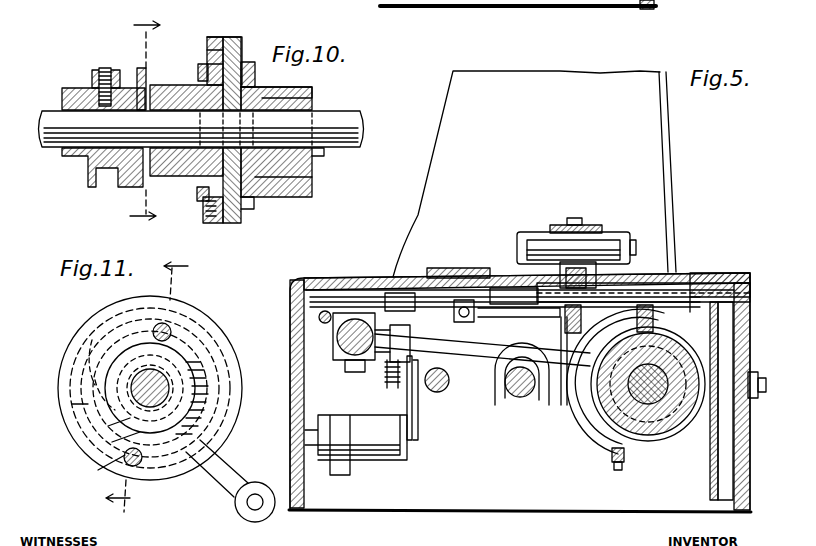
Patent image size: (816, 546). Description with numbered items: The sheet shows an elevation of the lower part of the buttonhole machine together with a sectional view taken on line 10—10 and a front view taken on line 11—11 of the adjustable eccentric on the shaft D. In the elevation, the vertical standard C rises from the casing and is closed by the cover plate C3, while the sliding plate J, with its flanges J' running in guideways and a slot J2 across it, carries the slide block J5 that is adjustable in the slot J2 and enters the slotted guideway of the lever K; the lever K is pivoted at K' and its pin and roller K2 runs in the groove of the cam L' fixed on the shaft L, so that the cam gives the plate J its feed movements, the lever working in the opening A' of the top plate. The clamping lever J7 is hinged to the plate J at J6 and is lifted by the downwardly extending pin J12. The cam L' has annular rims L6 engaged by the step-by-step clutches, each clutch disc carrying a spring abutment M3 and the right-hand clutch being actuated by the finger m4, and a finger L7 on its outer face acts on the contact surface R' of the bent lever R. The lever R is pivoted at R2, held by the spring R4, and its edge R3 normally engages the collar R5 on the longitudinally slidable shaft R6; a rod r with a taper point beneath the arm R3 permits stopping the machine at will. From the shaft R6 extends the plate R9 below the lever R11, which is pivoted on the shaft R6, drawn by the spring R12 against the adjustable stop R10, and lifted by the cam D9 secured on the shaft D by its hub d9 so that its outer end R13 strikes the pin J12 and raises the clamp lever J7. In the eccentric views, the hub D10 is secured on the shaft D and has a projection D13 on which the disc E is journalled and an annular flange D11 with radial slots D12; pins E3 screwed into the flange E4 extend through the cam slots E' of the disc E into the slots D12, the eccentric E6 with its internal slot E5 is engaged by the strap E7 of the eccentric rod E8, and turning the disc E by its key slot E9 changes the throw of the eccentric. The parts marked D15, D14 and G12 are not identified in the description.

In FIG. 10, the shaft D is at (360, 125).
In FIG. 11, the shaft D is at (182, 362).
In FIG. 5, the shaft D is at (512, 398).
In FIG. 10, the collar D15 is at (68, 88).
In FIG. 10, the hub D14 is at (110, 187).
In FIG. 10, the hub D10 is at (158, 176).
In FIG. 11, the hub D10 is at (190, 368).
In FIG. 10, the projection of hub D13 is at (262, 92).
In FIG. 10, the annular flange D11 is at (210, 40).
In FIG. 11, the annular flange D11 is at (224, 356).
In FIG. 10, the radial slots D12 is at (207, 62).
In FIG. 11, the radial slots D12 is at (158, 326).
In FIG. 5, the cam D9 is at (538, 378).
In FIG. 5, the hub of cam d9 is at (536, 402).
In FIG. 10, the disc E is at (235, 48).
In FIG. 10, the cam slots E' is at (272, 50).
In FIG. 11, the cam slots E' is at (143, 406).
In FIG. 10, the pins E3 is at (198, 74).
In FIG. 11, the pins E3 is at (128, 462).
In FIG. 10, the flange E4 is at (254, 206).
In FIG. 11, the flange E4 is at (72, 404).
In FIG. 10, the internal slot E5 is at (312, 160).
In FIG. 11, the internal slot E5 is at (128, 392).
In FIG. 10, the eccentric E6 is at (312, 106).
In FIG. 11, the eccentric E6 is at (110, 426).
In FIG. 10, the eccentric strap E7 is at (312, 92).
In FIG. 11, the eccentric strap E7 is at (114, 442).
In FIG. 11, the eccentric rod E8 is at (228, 470).
In FIG. 11, the key slot E9 is at (222, 403).
In FIG. 10, the section line 11— 11 is at (135, 122).
In FIG. 11, the section line 10— 10 is at (161, 389).
In FIG. 5, the spring abutment M3 is at (437, 4).
In FIG. 5, the vertical standard C is at (526, 174).
In FIG. 5, the cover plate C3 is at (673, 152).
In FIG. 5, the sliding plate J is at (527, 259).
In FIG. 5, the flanges J' is at (593, 264).
In FIG. 5, the slot J2 is at (690, 282).
In FIG. 5, the slide block J5 is at (604, 296).
In FIG. 5, the hinge connection J6 is at (636, 248).
In FIG. 5, the clamping lever J7 is at (588, 228).
In FIG. 5, the clamp lifting pin J12 is at (583, 326).
In FIG. 5, the slotted lever K is at (643, 293).
In FIG. 5, the pivot of lever K' is at (539, 392).
In FIG. 5, the cam engaging pin and roller K2 is at (648, 375).
In FIG. 5, the finger m4 is at (760, 372).
In FIG. 5, the opening A' is at (511, 271).
In FIG. 5, the bent lever R is at (519, 326).
In FIG. 5, the contact surface R' is at (626, 478).
In FIG. 5, the pivot R2 is at (470, 322).
In FIG. 5, the edge of lever R3 is at (356, 297).
In FIG. 5, the spring R4 is at (392, 293).
In FIG. 5, the collar R5 is at (350, 314).
In FIG. 5, the longitudinally slidable shaft R6 is at (348, 372).
In FIG. 5, the plate R9 is at (434, 396).
In FIG. 5, the adjustable stop R10 is at (406, 424).
In FIG. 5, the lever R11 is at (436, 348).
In FIG. 5, the spring R12 is at (390, 380).
In FIG. 5, the outer end of lever R13 is at (580, 396).
In FIG. 5, the rod r is at (325, 323).
In FIG. 5, the shaft G12 is at (444, 390).
In FIG. 5, the shaft L is at (615, 390).
In FIG. 5, the cam L' is at (698, 453).
In FIG. 5, the annular rims L6 is at (616, 462).
In FIG. 5, the finger L7 is at (636, 456).